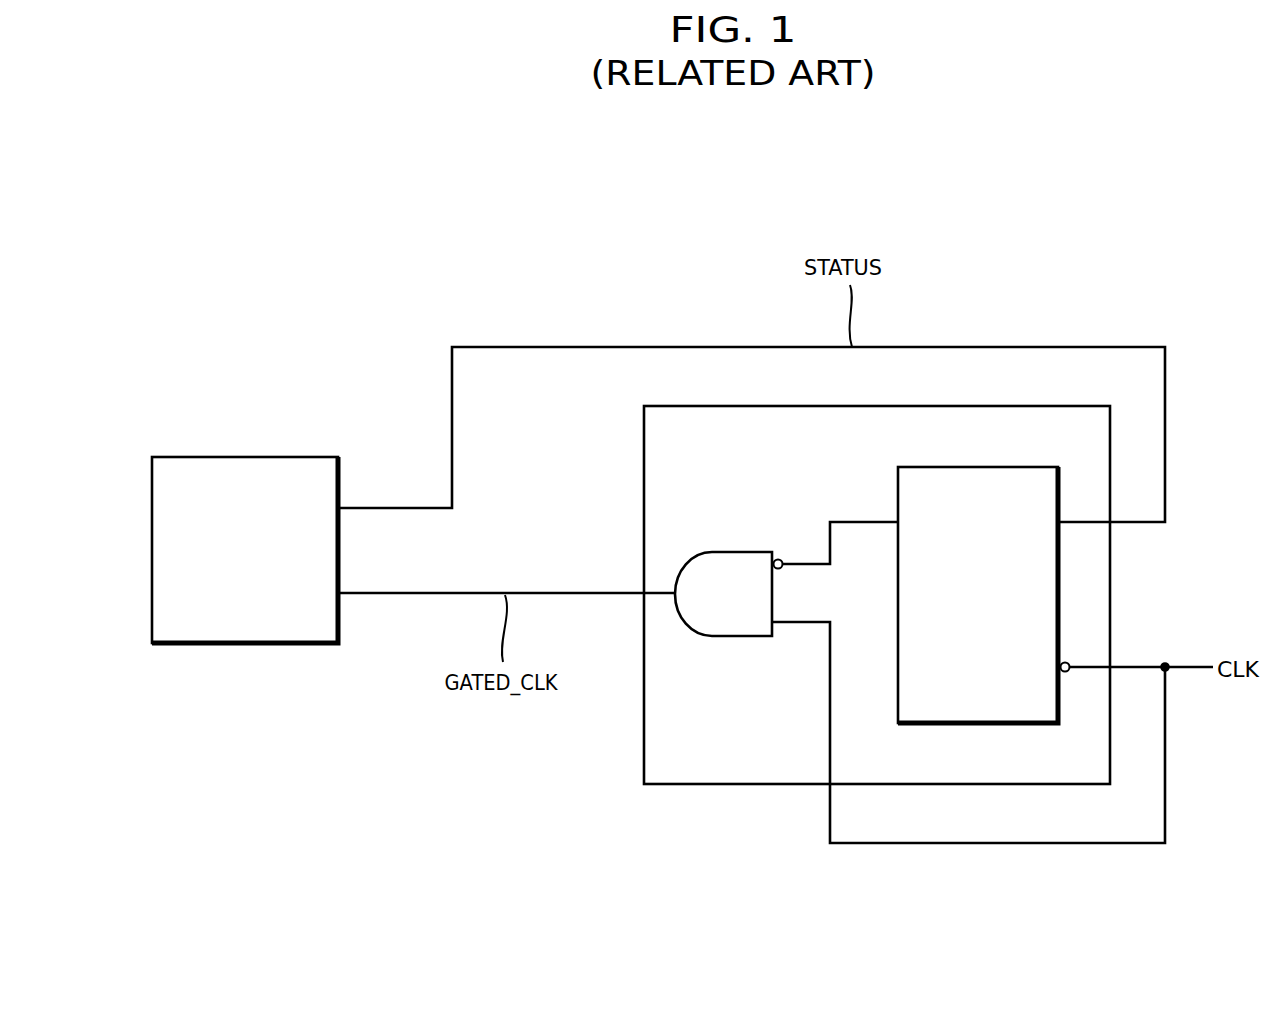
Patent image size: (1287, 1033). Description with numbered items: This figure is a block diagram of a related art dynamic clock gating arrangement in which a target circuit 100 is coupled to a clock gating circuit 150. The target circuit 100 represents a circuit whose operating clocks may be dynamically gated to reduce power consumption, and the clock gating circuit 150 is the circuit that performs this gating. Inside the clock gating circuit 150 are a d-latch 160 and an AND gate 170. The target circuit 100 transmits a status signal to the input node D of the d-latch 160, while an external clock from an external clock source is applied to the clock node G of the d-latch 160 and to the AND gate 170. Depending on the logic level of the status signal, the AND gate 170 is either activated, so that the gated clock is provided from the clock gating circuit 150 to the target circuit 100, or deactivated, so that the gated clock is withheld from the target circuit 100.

The target circuit 100 is at (245, 645).
The clock gating circuit 150 is at (644, 500).
The d-latch 160 is at (1060, 596).
The AND gate 170 is at (733, 552).